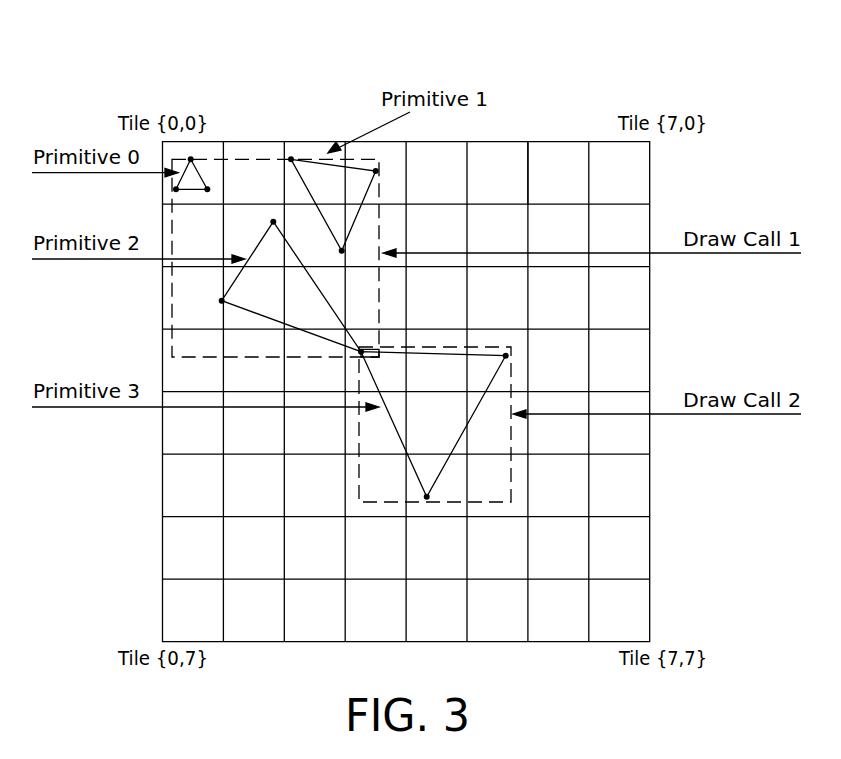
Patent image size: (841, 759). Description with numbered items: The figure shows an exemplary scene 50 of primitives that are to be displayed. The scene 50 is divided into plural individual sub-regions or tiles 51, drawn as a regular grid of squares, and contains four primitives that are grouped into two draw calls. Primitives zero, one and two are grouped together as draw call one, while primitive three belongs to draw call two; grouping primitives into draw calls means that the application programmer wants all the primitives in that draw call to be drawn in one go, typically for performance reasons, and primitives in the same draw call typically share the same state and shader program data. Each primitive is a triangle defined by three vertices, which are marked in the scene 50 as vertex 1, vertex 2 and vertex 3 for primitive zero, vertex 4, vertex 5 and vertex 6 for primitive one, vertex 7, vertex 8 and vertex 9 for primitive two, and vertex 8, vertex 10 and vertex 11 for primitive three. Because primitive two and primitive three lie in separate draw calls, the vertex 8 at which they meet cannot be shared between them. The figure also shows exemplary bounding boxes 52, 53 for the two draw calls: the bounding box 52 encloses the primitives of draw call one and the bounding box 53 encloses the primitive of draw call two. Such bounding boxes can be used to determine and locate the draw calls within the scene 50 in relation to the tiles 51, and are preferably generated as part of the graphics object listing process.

The scene 50 is at (254, 93).
The tile 51 is at (555, 141).
The bounding box 52 is at (172, 297).
The bounding box 53 is at (511, 489).
The vertex 1 is at (195, 152).
The vertex 2 is at (180, 196).
The vertex 3 is at (211, 196).
The vertex 4 is at (382, 164).
The vertex 5 is at (297, 152).
The vertex 6 is at (349, 250).
The vertex 7 is at (268, 217).
The vertex 8 is at (365, 343).
The vertex 9 is at (217, 311).
The vertex 10 is at (513, 345).
The vertex 11 is at (439, 495).